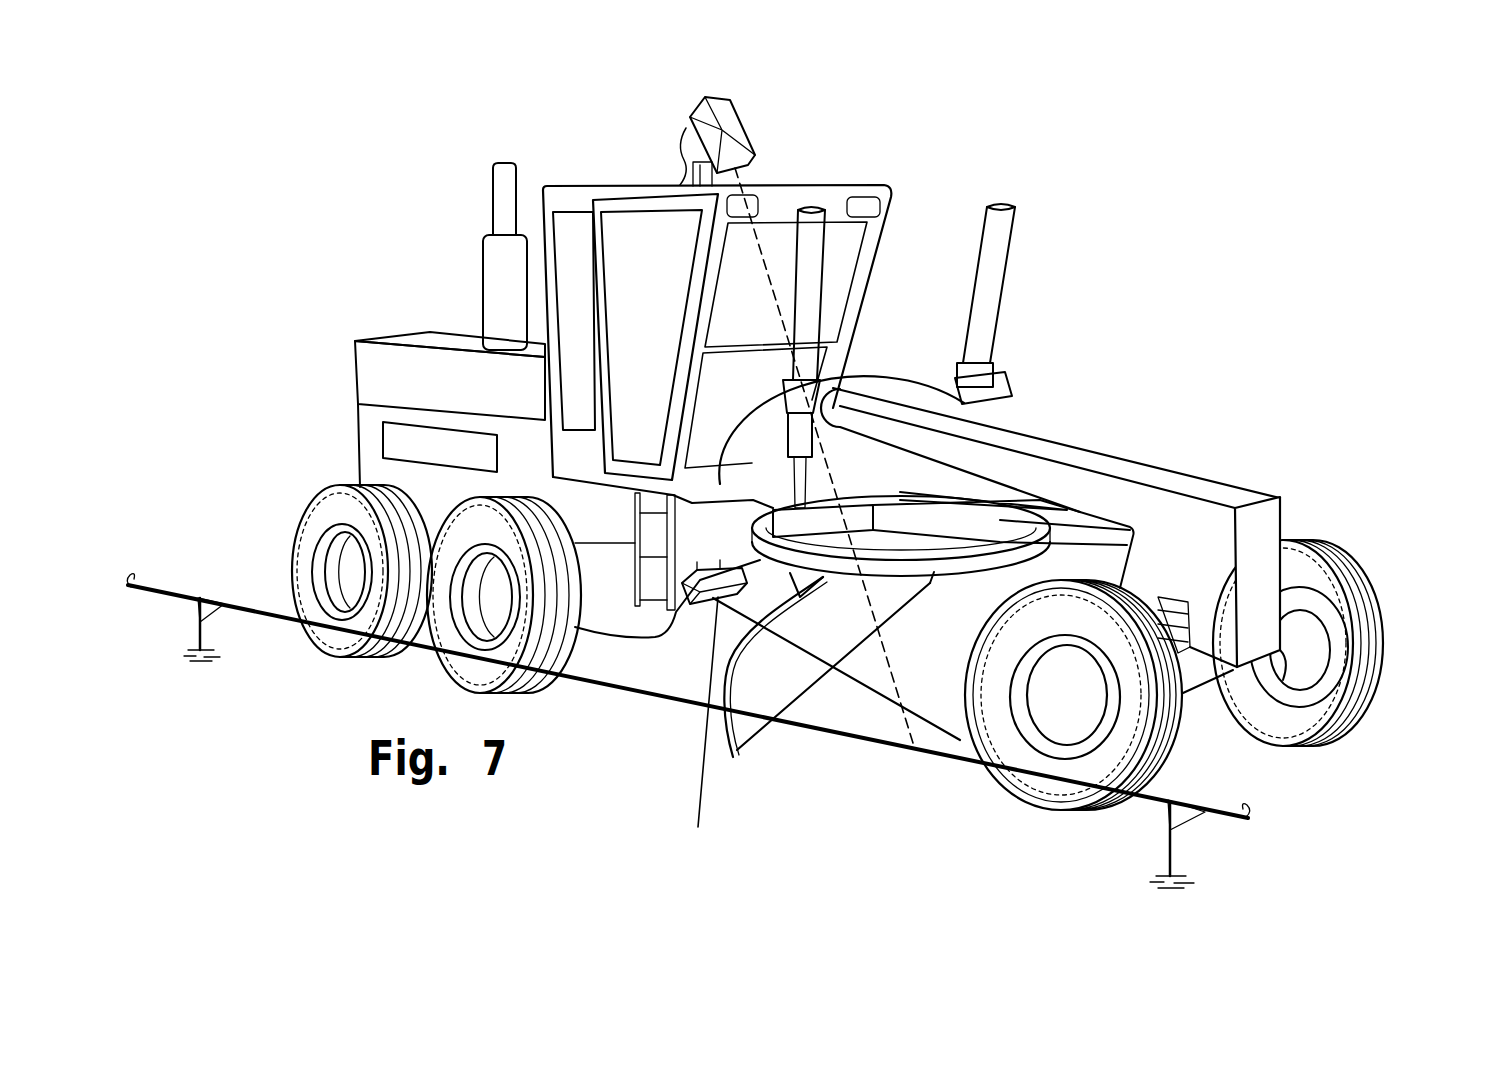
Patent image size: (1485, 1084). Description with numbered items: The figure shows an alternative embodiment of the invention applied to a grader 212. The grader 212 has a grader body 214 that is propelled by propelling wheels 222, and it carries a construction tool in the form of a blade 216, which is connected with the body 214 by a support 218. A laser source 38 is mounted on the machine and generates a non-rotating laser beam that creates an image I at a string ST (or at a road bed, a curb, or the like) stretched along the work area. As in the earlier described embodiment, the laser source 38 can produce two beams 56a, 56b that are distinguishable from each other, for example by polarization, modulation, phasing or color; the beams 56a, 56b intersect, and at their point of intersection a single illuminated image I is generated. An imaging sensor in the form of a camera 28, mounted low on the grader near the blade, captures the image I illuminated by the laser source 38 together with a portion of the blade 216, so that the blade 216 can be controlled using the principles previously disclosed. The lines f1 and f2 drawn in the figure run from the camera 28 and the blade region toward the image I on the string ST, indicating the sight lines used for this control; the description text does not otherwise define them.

The laser source 38 is at (750, 130).
The grader 212 is at (822, 176).
The beam 56a is at (772, 292).
The beam 56b is at (985, 304).
The support 218 is at (872, 480).
The grader body 214 is at (1163, 470).
The propelling wheels 222 is at (296, 528).
The camera 28 is at (697, 604).
The blade 216 is at (725, 752).
The first force vector f1 is at (702, 757).
The second force vector f2 is at (867, 680).
The image I is at (913, 743).
The string ST is at (938, 758).